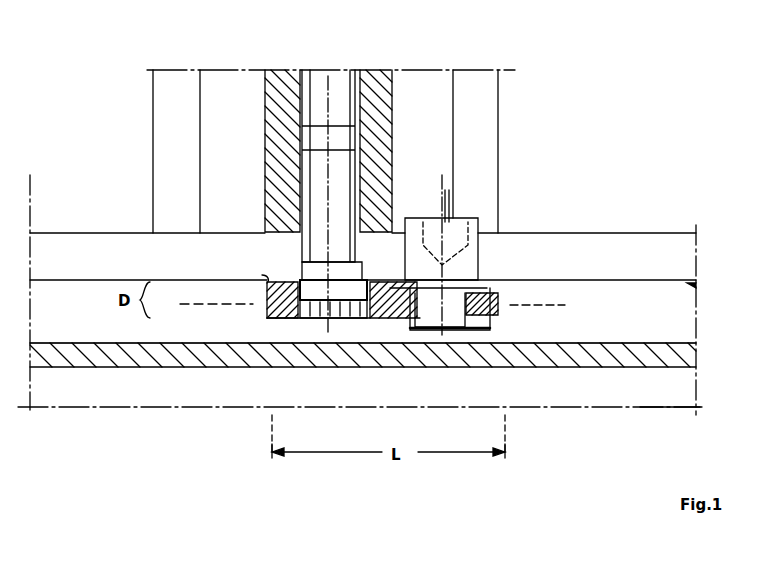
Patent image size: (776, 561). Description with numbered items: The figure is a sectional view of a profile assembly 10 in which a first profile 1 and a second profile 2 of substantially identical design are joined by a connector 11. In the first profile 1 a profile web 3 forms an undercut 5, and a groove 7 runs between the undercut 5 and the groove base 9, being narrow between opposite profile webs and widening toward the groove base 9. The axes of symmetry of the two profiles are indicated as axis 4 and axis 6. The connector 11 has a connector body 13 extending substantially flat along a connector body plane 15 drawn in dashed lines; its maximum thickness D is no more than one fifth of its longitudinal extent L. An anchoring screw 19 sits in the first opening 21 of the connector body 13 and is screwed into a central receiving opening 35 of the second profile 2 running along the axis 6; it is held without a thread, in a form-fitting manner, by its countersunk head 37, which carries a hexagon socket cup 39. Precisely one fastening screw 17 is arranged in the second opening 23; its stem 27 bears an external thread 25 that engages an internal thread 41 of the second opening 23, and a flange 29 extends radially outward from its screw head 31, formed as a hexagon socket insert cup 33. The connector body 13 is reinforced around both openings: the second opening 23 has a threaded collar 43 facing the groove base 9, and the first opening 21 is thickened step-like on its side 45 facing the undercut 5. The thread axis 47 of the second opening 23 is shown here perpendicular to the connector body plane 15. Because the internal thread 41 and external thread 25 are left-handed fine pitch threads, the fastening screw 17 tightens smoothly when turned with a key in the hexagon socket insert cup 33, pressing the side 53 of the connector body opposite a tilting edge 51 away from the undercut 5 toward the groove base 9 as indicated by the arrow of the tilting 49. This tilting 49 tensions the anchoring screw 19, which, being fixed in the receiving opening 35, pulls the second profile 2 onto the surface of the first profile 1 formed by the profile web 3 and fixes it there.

The first profile 1 is at (640, 235).
The second profile 2 is at (498, 88).
The profile web 3 is at (683, 257).
The axis of symmetry of the first profile 4 is at (696, 406).
The undercut 5 is at (696, 297).
The axis of symmetry of the second profile 6 is at (330, 90).
The groove 7 is at (696, 322).
The groove base 9 is at (696, 343).
The profile assembly 10 is at (645, 81).
The connector 11 is at (245, 314).
The connector body 13 is at (390, 322).
The connector body plane 15 is at (548, 307).
The fastening screw 17 is at (480, 253).
The anchoring screw 19 is at (265, 190).
The first opening 21 is at (270, 320).
The second opening 23 is at (470, 333).
The external thread 25 is at (418, 333).
The stem 27 is at (446, 333).
The flange 29 is at (490, 282).
The screw head 31 is at (472, 220).
The hexagon socket insert cup 33 is at (447, 200).
The central receiving opening 35 is at (322, 90).
The countersunk head 37 is at (362, 322).
The hexagon socket cup 39 is at (315, 320).
The internal thread 41 is at (500, 296).
The threaded collar 43 is at (502, 335).
The side of the first opening 45 is at (370, 284).
The thread axis 47 is at (440, 205).
The tilting 49 is at (533, 340).
The tilting edge 51 is at (266, 277).
The side opposite the tilting edge 53 is at (496, 315).